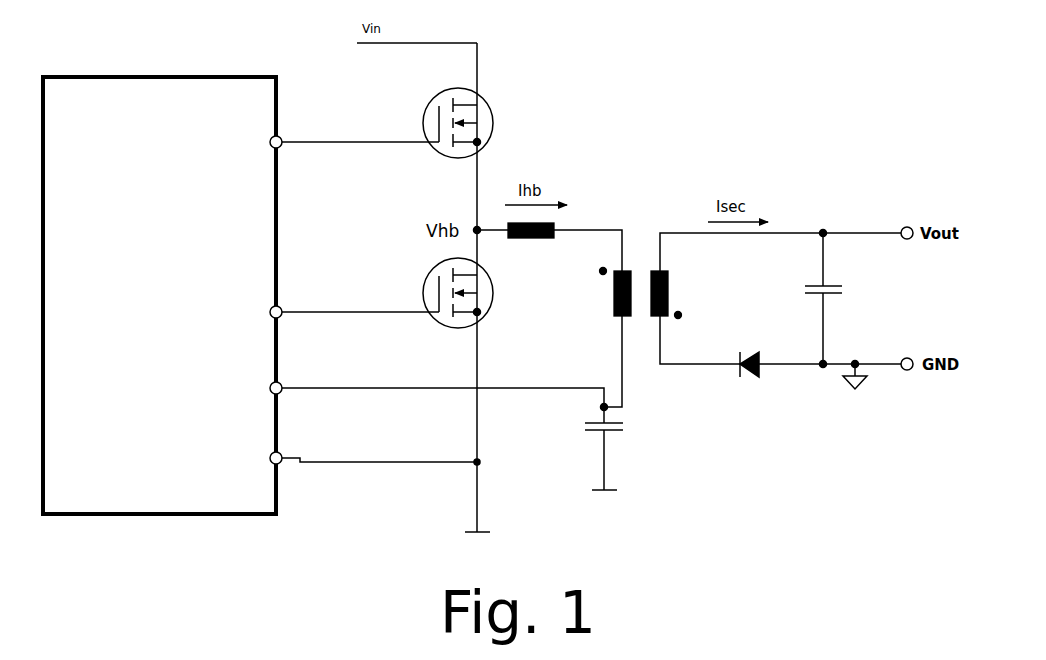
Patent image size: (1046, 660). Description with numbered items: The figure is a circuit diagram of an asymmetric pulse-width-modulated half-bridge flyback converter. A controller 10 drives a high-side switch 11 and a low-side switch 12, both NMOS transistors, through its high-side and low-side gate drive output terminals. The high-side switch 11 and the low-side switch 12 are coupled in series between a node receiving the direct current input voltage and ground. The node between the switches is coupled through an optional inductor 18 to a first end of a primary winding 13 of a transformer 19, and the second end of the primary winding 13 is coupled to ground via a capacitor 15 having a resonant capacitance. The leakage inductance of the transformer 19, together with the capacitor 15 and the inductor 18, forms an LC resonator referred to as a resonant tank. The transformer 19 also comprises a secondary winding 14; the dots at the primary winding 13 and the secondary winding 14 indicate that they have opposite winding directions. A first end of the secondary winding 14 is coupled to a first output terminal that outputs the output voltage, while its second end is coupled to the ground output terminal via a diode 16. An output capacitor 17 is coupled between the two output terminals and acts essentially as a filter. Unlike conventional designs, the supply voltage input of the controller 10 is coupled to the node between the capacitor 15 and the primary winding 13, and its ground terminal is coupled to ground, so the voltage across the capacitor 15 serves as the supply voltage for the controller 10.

The controller 10 is at (163, 516).
The high-side switch 11 is at (493, 133).
The low-side switch 12 is at (493, 310).
The primary winding 13 is at (612, 297).
The secondary winding 14 is at (670, 295).
The capacitor 15 is at (609, 435).
The diode 16 is at (751, 378).
The output capacitor 17 is at (835, 286).
The inductor 18 is at (543, 223).
The transformer 19 is at (644, 238).